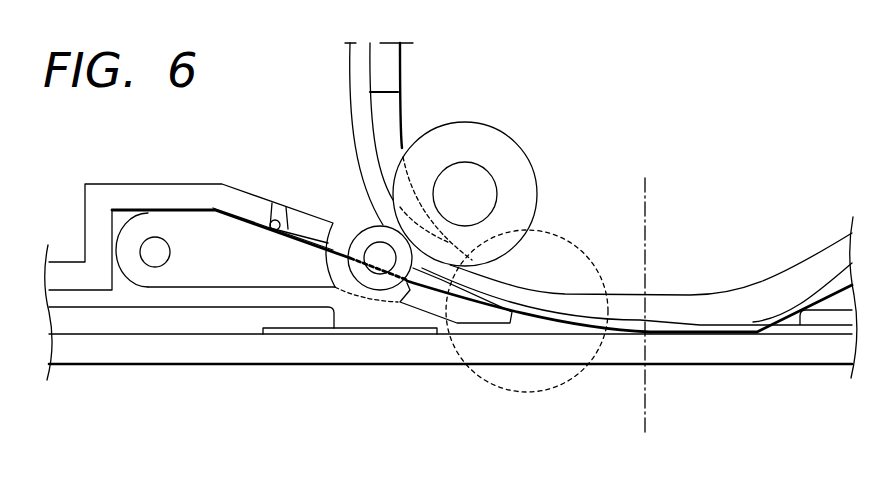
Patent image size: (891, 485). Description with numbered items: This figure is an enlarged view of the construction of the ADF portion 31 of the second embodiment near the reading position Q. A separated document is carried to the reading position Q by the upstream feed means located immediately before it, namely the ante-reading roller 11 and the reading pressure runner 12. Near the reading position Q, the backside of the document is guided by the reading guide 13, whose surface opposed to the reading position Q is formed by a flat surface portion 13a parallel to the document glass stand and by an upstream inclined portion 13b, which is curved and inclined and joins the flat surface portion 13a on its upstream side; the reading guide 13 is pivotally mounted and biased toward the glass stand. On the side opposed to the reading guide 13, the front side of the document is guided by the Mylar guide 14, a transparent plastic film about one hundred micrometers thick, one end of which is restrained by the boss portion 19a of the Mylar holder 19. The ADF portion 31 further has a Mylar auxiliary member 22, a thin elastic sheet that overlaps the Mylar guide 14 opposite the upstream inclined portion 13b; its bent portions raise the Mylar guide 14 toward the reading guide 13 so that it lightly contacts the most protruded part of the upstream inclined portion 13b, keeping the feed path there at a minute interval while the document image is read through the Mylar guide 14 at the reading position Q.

The ante-reading roller 11 is at (497, 145).
The reading pressure runner 12 is at (360, 232).
The reading guide 13 is at (382, 127).
The flat surface portion 13a is at (665, 320).
The upstream inclined portion 13b is at (490, 377).
The Mylar guide 14 is at (594, 320).
The Mylar holder 19 is at (318, 272).
The boss portion 19a is at (268, 226).
The Mylar auxiliary member 22 is at (472, 290).
The ADF portion 31 is at (597, 135).
The reading position Q is at (637, 367).